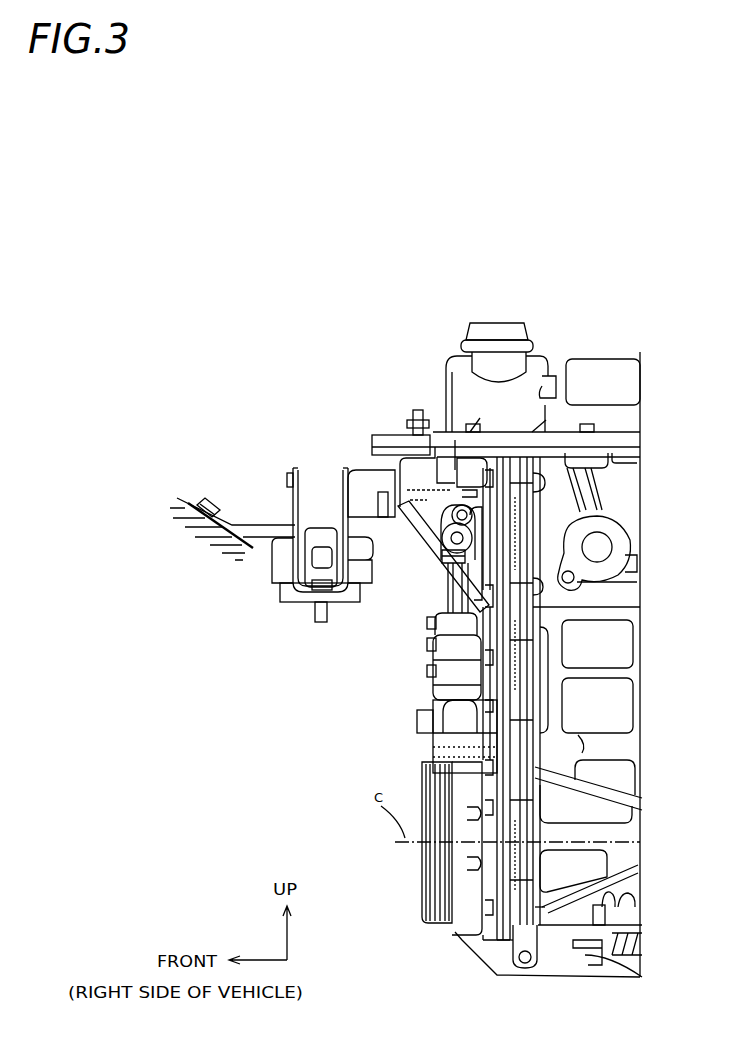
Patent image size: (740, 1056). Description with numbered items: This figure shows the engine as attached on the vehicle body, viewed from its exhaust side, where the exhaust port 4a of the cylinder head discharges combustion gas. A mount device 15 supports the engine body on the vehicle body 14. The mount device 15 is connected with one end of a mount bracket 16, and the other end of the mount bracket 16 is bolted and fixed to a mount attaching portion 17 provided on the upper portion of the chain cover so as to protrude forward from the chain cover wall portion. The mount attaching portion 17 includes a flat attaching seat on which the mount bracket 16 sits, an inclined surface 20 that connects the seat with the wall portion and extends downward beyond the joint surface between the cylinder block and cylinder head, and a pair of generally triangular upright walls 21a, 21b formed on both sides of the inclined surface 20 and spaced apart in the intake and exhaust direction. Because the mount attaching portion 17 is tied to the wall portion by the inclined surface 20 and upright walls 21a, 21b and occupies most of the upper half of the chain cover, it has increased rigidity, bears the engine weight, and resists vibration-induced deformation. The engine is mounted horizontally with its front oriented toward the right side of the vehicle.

The vehicle body 14 is at (193, 498).
The mount device 15 is at (322, 488).
The mount bracket 16 is at (397, 434).
The mount attaching portion 17 is at (398, 464).
The inclined surface 20 is at (437, 583).
The upright wall 21a is at (414, 548).
The upright wall 21b is at (434, 518).
The exhaust port 4a is at (600, 548).